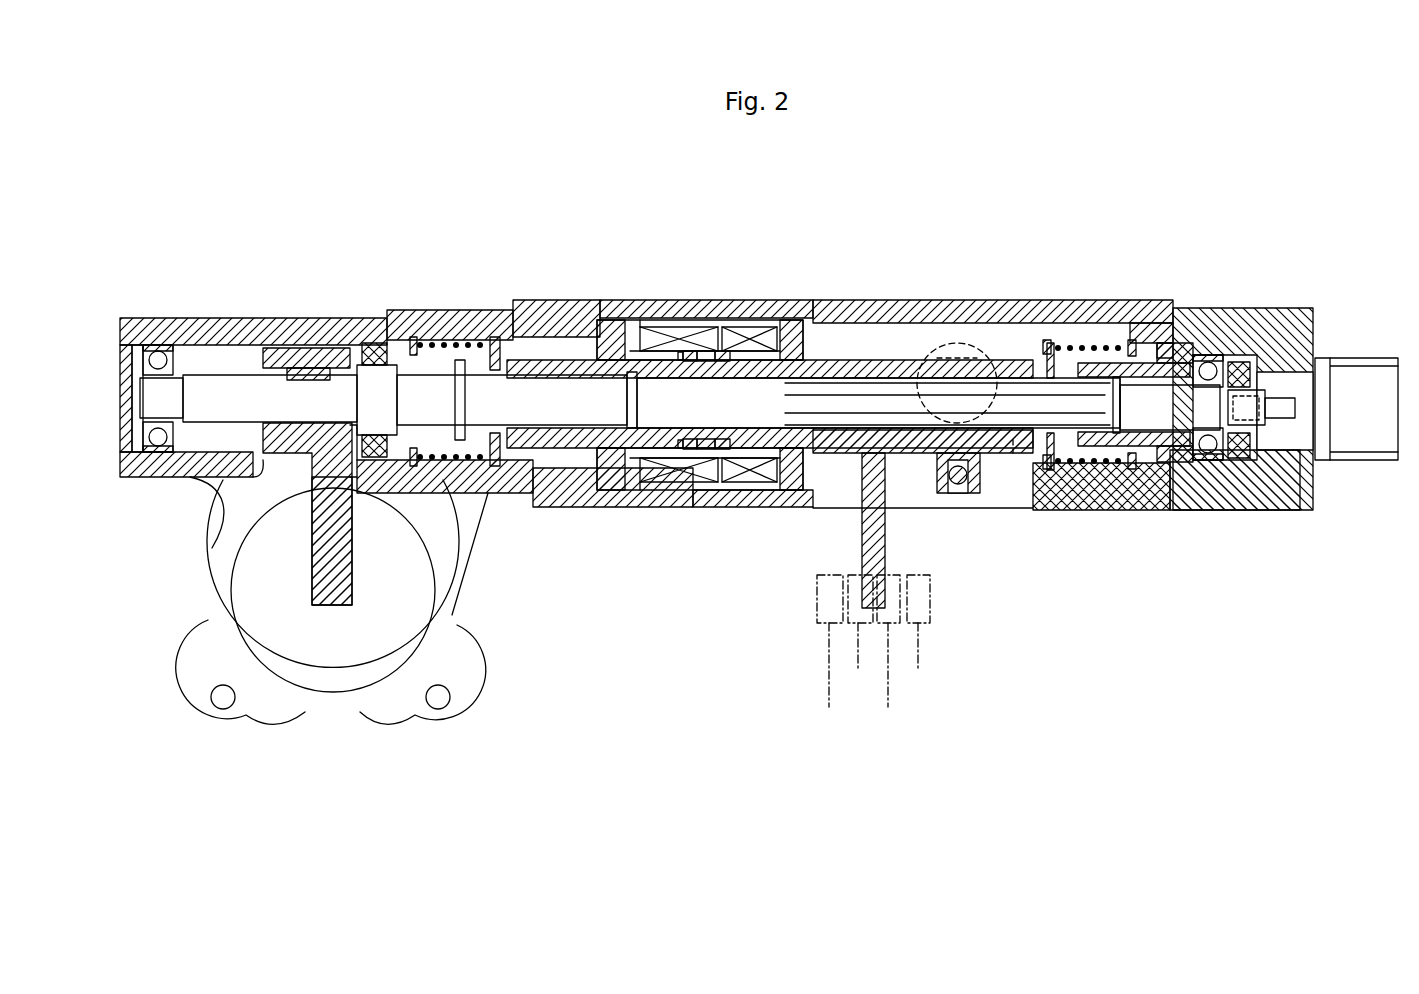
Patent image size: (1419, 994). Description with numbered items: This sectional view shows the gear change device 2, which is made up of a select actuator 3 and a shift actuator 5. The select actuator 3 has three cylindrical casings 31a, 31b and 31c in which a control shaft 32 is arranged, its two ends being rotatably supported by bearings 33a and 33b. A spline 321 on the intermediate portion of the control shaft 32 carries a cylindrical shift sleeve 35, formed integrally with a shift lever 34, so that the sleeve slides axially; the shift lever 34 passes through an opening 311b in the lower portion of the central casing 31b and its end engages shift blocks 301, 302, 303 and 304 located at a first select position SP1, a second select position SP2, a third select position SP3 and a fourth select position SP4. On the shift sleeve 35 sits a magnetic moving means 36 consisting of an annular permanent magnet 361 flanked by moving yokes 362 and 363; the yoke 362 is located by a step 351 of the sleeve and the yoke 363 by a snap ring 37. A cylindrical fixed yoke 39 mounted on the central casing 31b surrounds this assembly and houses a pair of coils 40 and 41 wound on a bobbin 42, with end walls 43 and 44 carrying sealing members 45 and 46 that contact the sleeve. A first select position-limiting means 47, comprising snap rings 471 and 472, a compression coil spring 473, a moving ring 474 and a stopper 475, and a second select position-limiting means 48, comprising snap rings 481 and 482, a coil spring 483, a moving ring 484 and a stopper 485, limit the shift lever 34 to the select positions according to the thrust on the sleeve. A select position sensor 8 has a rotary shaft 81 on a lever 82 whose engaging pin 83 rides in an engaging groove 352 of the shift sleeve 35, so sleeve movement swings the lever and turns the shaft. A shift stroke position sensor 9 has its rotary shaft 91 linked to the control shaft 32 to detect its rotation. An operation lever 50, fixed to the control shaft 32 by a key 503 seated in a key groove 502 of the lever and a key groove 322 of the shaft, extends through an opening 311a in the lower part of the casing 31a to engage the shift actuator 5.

The gear change device 2 is at (541, 220).
The select actuator 3 is at (745, 297).
The shift actuator 5 is at (183, 657).
The select position sensor 8 is at (932, 343).
The shift stroke position sensor 9 is at (1355, 358).
The casing 31a is at (232, 318).
The central casing 31b is at (884, 300).
The casing 31c is at (1260, 308).
The opening 311a is at (205, 482).
The opening 311b is at (835, 495).
The control shaft 32 is at (478, 384).
The spline 321 is at (1012, 397).
The key groove 322 is at (287, 383).
The bearing 33a is at (160, 345).
The bearing 33b is at (1205, 355).
The shift lever 34 is at (886, 525).
The shift sleeve 35 is at (862, 360).
The step 351 is at (760, 320).
The engaging groove 352 is at (958, 487).
The magnetic moving means 36 is at (618, 350).
The permanent magnet 361 is at (705, 364).
The moving yoke 362 is at (735, 364).
The moving yoke 363 is at (692, 364).
The snap ring 37 is at (632, 392).
The fixed yoke 39 is at (693, 320).
The coil 40 is at (720, 488).
The coil 41 is at (665, 490).
The bobbin 42 is at (615, 322).
The end wall 43 is at (795, 320).
The end wall 44 is at (645, 337).
The sealing member 45 is at (770, 335).
The sealing member 46 is at (512, 336).
The first select position-limiting means 47 is at (1058, 343).
The snap ring 471 is at (1051, 470).
The snap ring 472 is at (1145, 465).
The compression coil spring 473 is at (1130, 465).
The moving ring 474 is at (1085, 465).
The stopper 475 is at (1090, 363).
The second select position-limiting means 48 is at (438, 335).
The snap ring 481 is at (495, 463).
The snap ring 482 is at (374, 458).
The coil spring 483 is at (412, 337).
The moving ring 484 is at (488, 498).
The stopper 485 is at (493, 337).
The operation lever 50 is at (315, 547).
The key groove 502 is at (300, 368).
The key 503 is at (320, 348).
The rotary shaft 81 is at (964, 350).
The lever 82 is at (1012, 448).
The engaging pin 83 is at (960, 494).
The rotary shaft 91 is at (1242, 460).
The shift block 301 is at (932, 610).
The shift block 302 is at (893, 575).
The shift block 303 is at (850, 575).
The shift block 304 is at (817, 595).
The first select position SP1 is at (932, 664).
The second select position SP2 is at (887, 681).
The third select position SP3 is at (860, 664).
The fourth select position SP4 is at (822, 681).